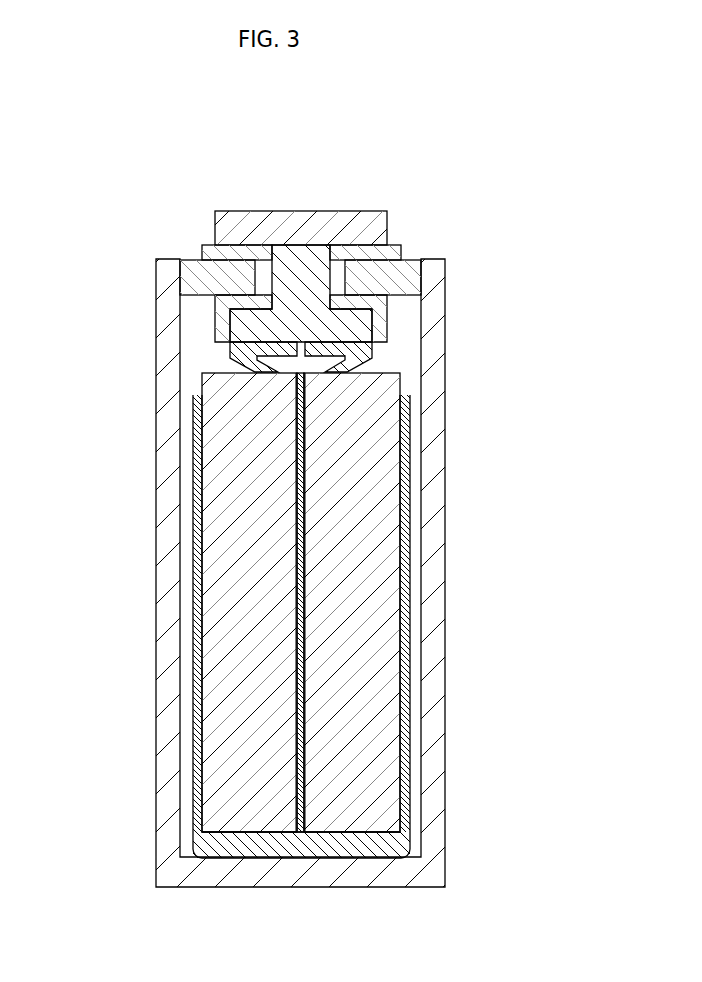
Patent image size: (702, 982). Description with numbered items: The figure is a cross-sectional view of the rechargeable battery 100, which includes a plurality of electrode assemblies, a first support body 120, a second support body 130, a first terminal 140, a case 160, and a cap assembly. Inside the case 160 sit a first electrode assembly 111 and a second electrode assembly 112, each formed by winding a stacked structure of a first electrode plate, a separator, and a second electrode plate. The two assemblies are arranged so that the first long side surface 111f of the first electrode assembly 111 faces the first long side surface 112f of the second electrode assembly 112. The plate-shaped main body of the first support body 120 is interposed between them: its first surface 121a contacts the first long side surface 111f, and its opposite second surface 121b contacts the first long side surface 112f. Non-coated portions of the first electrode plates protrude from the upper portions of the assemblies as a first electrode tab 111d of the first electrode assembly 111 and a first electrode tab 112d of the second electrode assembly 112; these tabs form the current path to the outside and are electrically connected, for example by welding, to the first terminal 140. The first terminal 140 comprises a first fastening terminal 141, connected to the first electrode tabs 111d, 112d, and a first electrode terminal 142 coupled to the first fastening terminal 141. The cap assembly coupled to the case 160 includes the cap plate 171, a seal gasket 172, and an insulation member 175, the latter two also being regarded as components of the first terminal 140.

The rechargeable battery 100 is at (503, 160).
The first terminal 140 is at (338, 147).
The first fastening terminal 141 is at (316, 211).
The first electrode terminal 142 is at (250, 211).
The cap plate 171 is at (215, 266).
The insulation member 175 is at (403, 250).
The seal gasket 172 is at (388, 310).
The case 160 is at (166, 304).
The first electrode assembly 111 is at (225, 486).
The second electrode assembly 112 is at (378, 513).
The first support body 120 is at (305, 440).
The first electrode tab 111d is at (230, 352).
The first electrode tab 112d is at (372, 352).
The first surface 121a is at (295, 612).
The second surface 121b is at (307, 623).
The second support body 130 is at (410, 846).
The first long side surface 111f is at (330, 835).
The first long side surface 112f is at (262, 835).